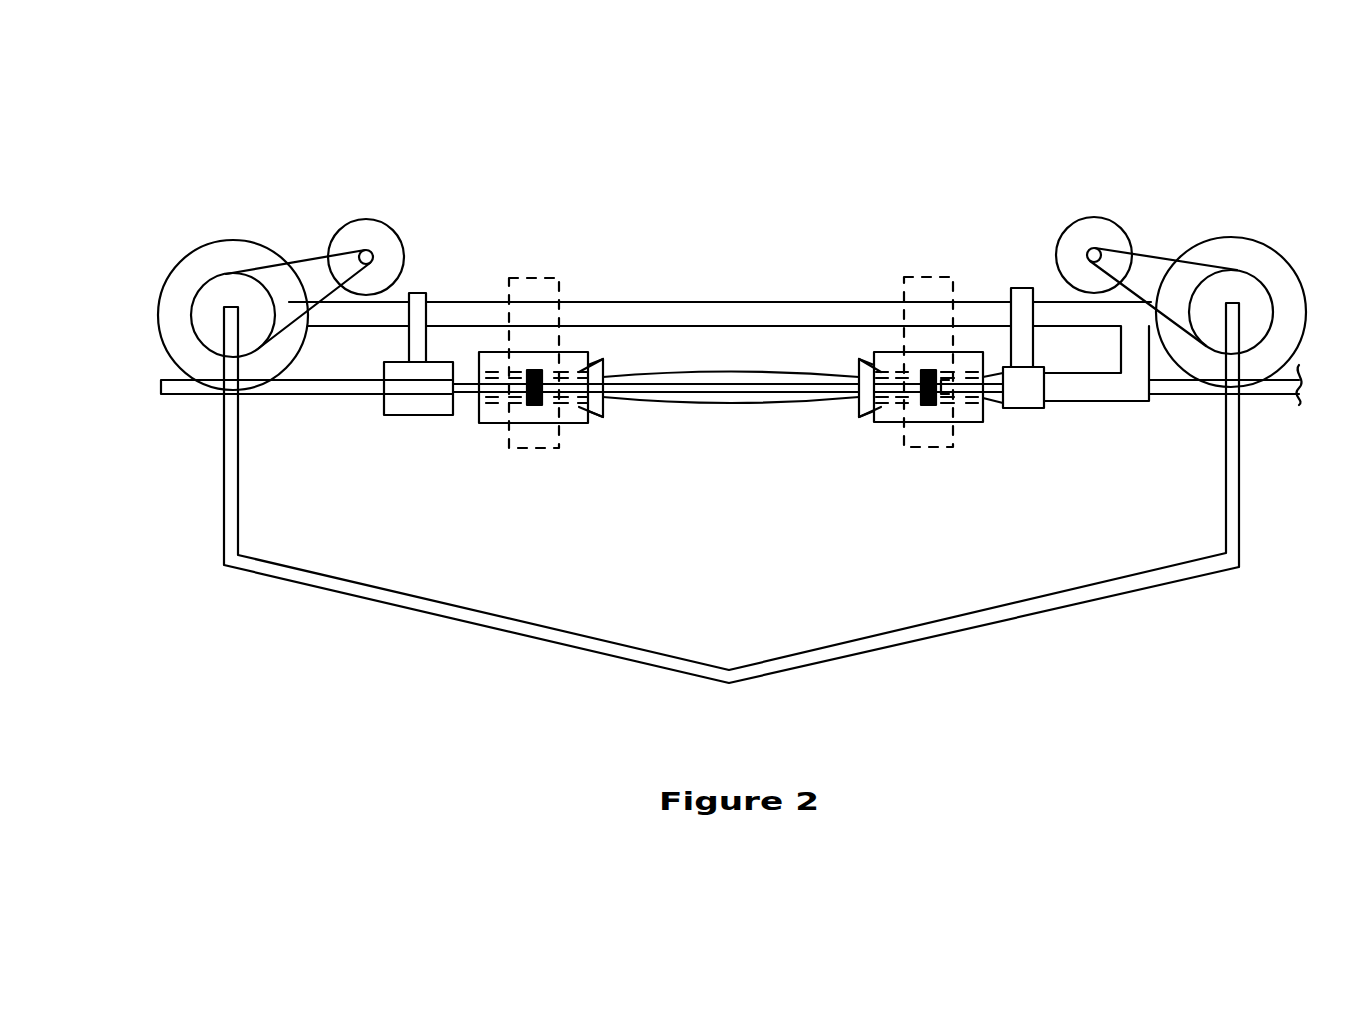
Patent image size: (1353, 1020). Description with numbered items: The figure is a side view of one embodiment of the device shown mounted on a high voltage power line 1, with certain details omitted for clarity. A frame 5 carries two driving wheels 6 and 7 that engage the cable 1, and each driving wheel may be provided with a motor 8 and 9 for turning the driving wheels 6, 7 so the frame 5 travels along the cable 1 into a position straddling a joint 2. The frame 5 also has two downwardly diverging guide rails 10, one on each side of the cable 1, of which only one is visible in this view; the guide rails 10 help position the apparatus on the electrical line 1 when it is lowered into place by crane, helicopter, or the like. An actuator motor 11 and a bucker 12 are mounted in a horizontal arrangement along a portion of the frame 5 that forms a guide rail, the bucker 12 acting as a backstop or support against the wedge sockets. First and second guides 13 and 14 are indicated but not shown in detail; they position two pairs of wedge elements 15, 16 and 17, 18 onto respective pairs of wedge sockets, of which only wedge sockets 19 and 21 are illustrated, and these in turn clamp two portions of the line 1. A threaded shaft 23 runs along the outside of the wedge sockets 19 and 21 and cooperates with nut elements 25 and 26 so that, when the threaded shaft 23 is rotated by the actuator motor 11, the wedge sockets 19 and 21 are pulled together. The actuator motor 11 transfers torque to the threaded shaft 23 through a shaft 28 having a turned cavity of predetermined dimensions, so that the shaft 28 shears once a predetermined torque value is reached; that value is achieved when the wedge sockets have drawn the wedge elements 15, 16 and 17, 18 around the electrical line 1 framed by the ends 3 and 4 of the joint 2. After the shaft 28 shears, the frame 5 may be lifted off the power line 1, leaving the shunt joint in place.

The high voltage power line 1 is at (212, 395).
The joint 2 is at (747, 370).
The end of joint 3 is at (610, 362).
The end of joint 4 is at (857, 358).
The frame 5 is at (443, 302).
The driving wheel 6 is at (222, 242).
The driving wheel 7 is at (1230, 237).
The motor 8 is at (365, 219).
The motor 9 is at (1093, 217).
The guide rail 10 is at (427, 613).
The actuator motor 11 is at (387, 417).
The bucker 12 is at (1023, 408).
The first guide 13 is at (537, 277).
The second guide 14 is at (942, 277).
The wedge element 15 is at (583, 355).
The wedge element 16 is at (603, 410).
The wedge element 17 is at (873, 365).
The wedge element 18 is at (860, 410).
The wedge socket 19 is at (527, 448).
The wedge socket 21 is at (968, 420).
The threaded shaft 23 is at (768, 394).
The nut element 25 is at (540, 407).
The nut element 26 is at (922, 400).
The shaft 28 is at (460, 395).